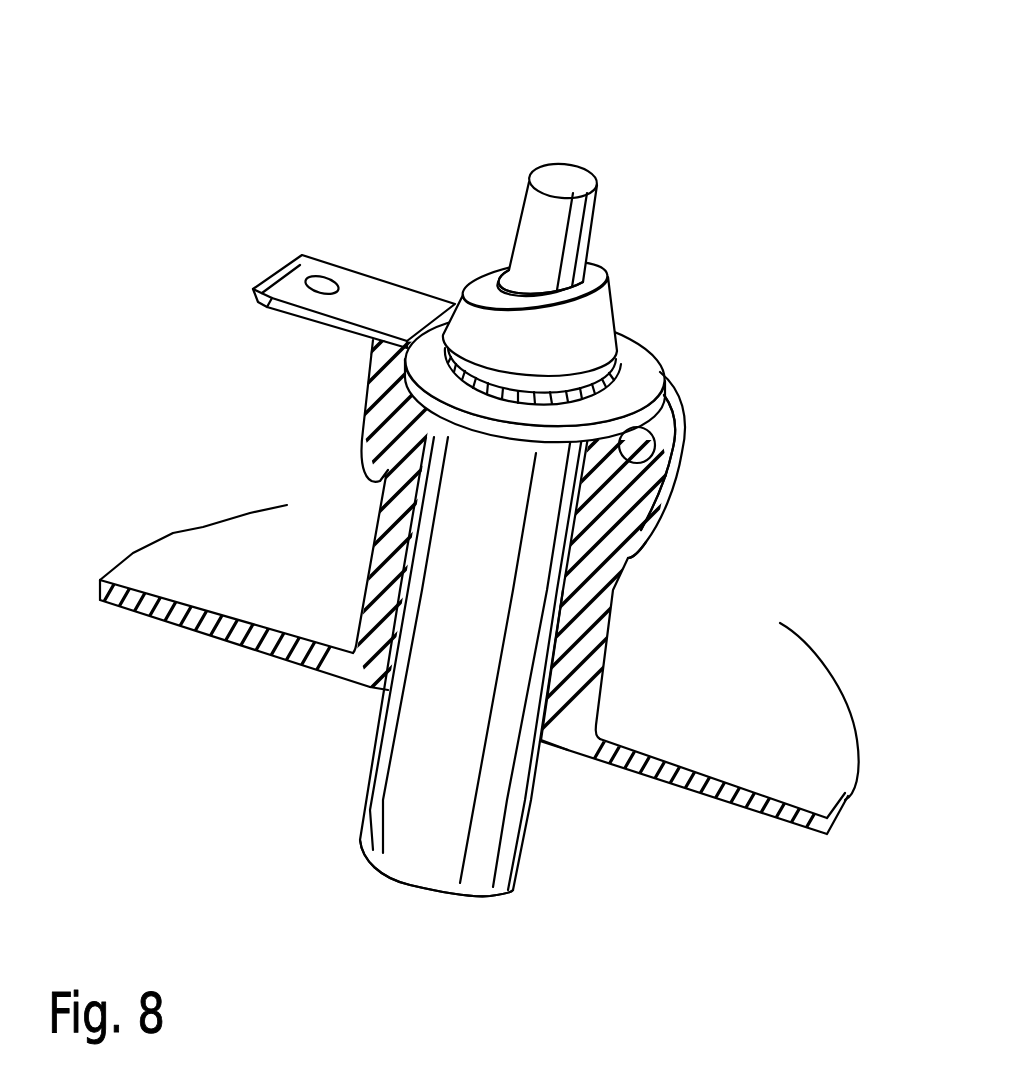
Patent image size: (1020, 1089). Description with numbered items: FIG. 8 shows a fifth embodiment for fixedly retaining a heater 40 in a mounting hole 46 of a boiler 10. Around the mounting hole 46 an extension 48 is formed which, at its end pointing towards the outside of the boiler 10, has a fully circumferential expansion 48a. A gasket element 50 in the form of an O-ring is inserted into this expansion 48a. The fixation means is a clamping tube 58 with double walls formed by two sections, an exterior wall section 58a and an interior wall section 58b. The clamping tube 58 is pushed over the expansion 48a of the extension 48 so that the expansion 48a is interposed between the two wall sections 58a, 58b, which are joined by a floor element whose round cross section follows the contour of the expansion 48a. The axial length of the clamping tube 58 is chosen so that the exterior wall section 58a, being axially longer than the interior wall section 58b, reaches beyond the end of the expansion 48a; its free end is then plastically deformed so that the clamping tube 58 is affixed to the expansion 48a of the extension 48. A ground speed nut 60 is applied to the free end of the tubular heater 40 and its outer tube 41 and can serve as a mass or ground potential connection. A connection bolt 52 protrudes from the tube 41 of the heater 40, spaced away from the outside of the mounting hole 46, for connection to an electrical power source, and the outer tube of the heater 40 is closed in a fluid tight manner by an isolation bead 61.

The boiler 10 is at (174, 526).
The heater 40 is at (395, 755).
The tube 41 is at (526, 835).
The mounting hole 46 is at (556, 712).
The extension 48 is at (582, 640).
The expansion 48a is at (660, 520).
The gasket element 50 is at (370, 438).
The connection bolt 52 is at (572, 180).
The clamping tube 58 is at (667, 370).
The exterior wall section 58a is at (672, 460).
The interior wall section 58b is at (670, 478).
The speed nut 60 is at (357, 273).
The isolation bead 61 is at (590, 308).